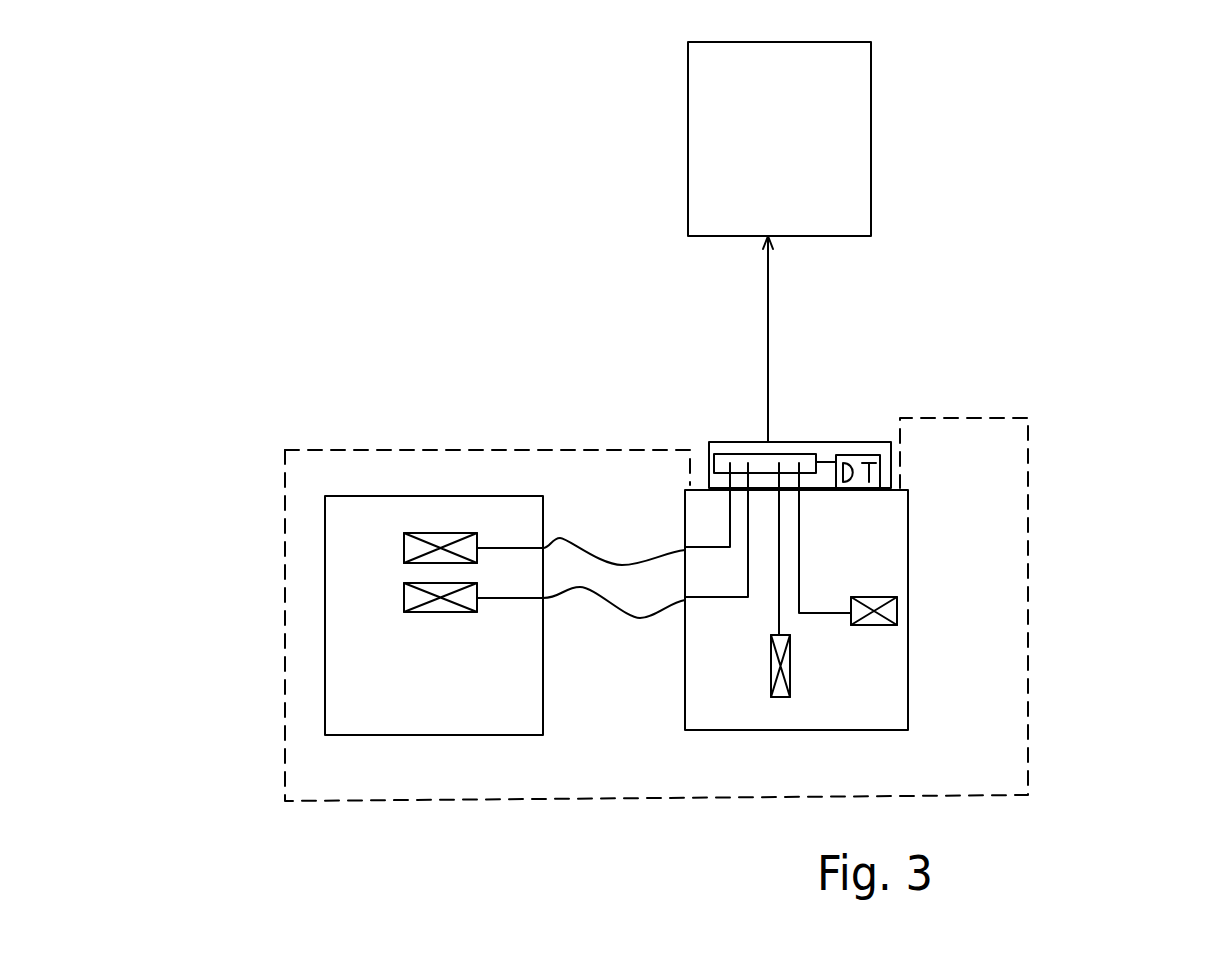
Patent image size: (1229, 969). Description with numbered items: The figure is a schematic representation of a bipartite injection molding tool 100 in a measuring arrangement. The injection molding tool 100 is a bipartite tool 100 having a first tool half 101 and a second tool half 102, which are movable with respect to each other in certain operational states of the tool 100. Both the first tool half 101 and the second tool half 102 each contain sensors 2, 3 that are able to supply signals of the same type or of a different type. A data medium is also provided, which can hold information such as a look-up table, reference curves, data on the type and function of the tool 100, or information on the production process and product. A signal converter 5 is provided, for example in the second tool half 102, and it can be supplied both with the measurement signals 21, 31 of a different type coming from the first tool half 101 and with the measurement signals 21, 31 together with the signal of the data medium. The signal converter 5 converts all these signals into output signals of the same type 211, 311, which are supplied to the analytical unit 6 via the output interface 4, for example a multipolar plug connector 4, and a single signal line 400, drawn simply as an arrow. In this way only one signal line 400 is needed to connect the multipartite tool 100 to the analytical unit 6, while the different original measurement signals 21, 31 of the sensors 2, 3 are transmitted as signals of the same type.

The bipartite injection molding tool 100 is at (273, 767).
The first tool half 101 is at (363, 513).
The second tool half 102 is at (885, 533).
The sensor 2 is at (703, 623).
The sensor 3 is at (492, 628).
The measurement signal 21 is at (675, 576).
The measurement signal 31 is at (578, 587).
The output interface 4 is at (758, 440).
The signal converter 5 is at (792, 455).
The signal line 400 is at (880, 339).
The output signal 211 is at (880, 339).
The output signal 311 is at (768, 285).
The analytical unit 6 is at (860, 153).